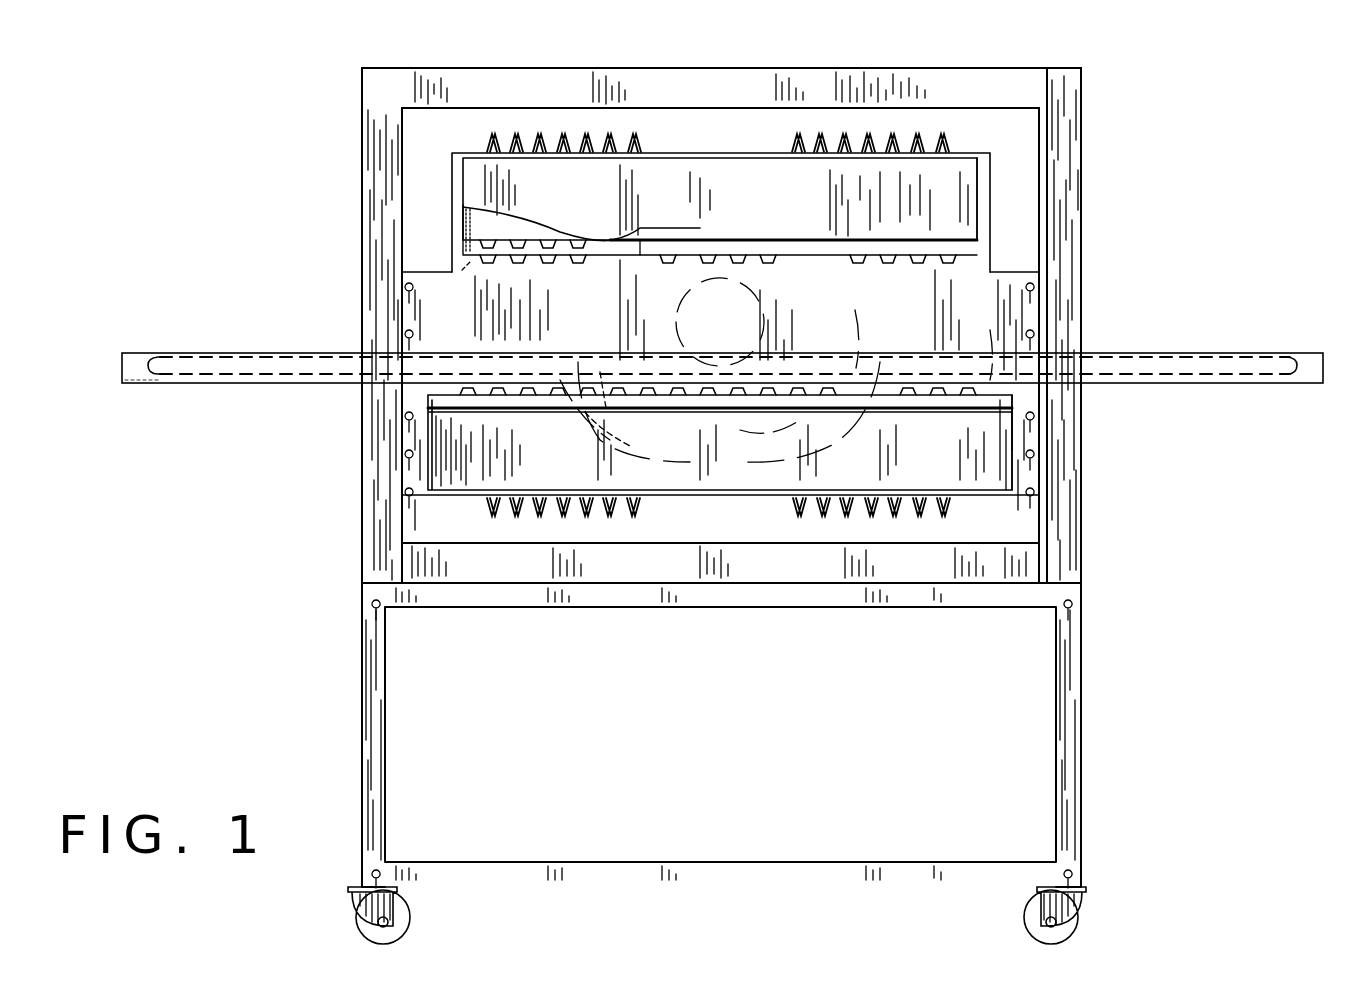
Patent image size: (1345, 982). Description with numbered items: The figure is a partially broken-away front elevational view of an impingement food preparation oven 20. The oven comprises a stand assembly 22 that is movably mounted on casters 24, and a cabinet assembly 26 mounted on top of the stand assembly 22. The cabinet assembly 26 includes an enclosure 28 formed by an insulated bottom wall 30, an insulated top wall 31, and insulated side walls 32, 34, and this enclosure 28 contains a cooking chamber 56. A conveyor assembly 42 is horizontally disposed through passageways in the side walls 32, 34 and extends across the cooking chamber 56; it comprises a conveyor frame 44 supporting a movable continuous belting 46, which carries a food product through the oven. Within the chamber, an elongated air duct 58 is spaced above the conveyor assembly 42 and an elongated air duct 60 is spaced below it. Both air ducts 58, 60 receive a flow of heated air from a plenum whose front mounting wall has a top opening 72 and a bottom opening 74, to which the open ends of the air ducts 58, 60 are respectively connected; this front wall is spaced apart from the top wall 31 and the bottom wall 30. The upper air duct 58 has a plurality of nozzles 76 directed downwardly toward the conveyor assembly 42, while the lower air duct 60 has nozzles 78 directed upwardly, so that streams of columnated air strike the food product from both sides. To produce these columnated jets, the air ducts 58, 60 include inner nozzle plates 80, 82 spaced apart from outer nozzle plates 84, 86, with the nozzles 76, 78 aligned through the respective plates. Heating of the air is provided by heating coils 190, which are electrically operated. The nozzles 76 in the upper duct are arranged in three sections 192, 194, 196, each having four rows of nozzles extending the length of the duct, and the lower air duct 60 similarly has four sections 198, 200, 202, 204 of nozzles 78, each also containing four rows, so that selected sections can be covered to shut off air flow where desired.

The impingement food preparation oven 20 is at (1155, 190).
The stand assembly 22 is at (1120, 742).
The casters 24 is at (1090, 912).
The cabinet assembly 26 is at (352, 262).
The enclosure 28 is at (1081, 312).
The insulated bottom wall 30 is at (1022, 568).
The insulated top wall 31 is at (878, 68).
The insulated side wall 32 is at (362, 190).
The insulated side wall 34 is at (1081, 150).
The conveyor assembly 42 is at (222, 350).
The conveyor frame 44 is at (152, 385).
The continuous belting 46 is at (232, 383).
The cooking chamber 56 is at (557, 331).
The elongated air duct 58 is at (482, 186).
The elongated air duct 60 is at (465, 492).
The top opening 72 is at (965, 193).
The bottom opening 74 is at (998, 490).
The nozzles 76 is at (550, 245).
The nozzles 78 is at (560, 402).
The inner nozzle plate 80 is at (570, 240).
The inner nozzle plate 82 is at (606, 408).
The outer nozzle plate 84 is at (580, 258).
The outer nozzle plate 86 is at (585, 414).
The heating coils 190 is at (948, 148).
The section of nozzles 192 is at (486, 267).
The section of nozzles 194 is at (712, 285).
The section of nozzles 196 is at (864, 281).
The section of nozzles 198 is at (524, 430).
The section of nozzles 200 is at (632, 432).
The section of nozzles 202 is at (808, 430).
The section of nozzles 204 is at (970, 428).